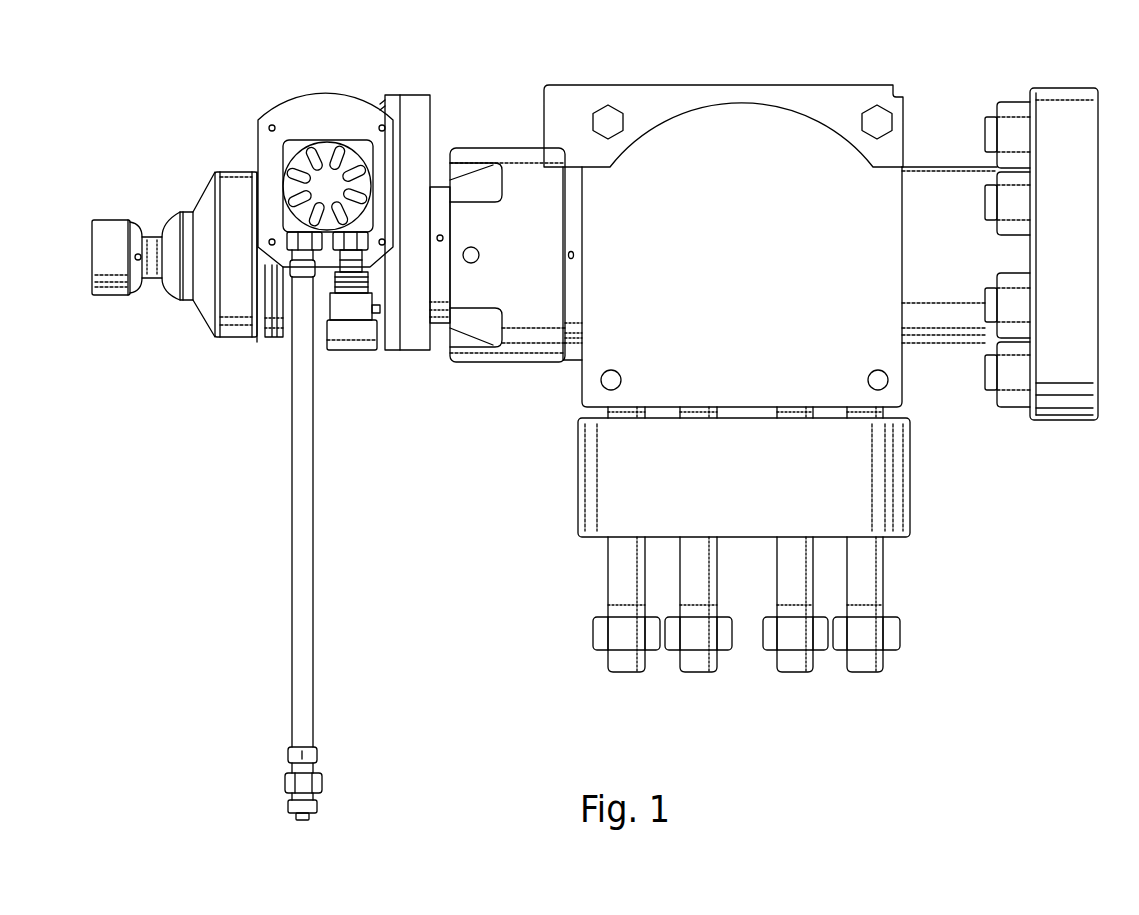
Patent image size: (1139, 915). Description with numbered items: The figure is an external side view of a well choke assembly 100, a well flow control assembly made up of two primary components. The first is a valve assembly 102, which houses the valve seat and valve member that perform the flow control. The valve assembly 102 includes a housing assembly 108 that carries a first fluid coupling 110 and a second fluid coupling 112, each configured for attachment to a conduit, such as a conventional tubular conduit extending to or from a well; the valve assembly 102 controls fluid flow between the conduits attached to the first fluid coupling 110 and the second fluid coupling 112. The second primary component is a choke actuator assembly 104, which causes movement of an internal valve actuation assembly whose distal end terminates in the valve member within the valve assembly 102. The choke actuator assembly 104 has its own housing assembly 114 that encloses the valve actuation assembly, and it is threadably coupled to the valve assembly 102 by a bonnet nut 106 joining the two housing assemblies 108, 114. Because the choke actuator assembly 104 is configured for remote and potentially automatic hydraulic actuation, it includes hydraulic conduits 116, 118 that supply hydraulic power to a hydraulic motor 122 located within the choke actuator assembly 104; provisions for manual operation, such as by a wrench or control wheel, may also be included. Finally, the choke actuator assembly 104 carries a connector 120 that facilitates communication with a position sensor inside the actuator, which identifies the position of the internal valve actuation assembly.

The well choke assembly 100 is at (805, 47).
The valve assembly 102 is at (913, 102).
The choke actuator assembly 104 is at (437, 113).
The bonnet nut 106 is at (503, 363).
The housing assembly 108 is at (903, 363).
The first fluid coupling 110 is at (912, 474).
The second fluid coupling 112 is at (1063, 88).
The housing assembly 114 is at (395, 352).
The hydraulic conduit 116 is at (292, 400).
The hydraulic conduit 118 is at (352, 351).
The connector 120 is at (112, 218).
The hydraulic motor 122 is at (332, 89).